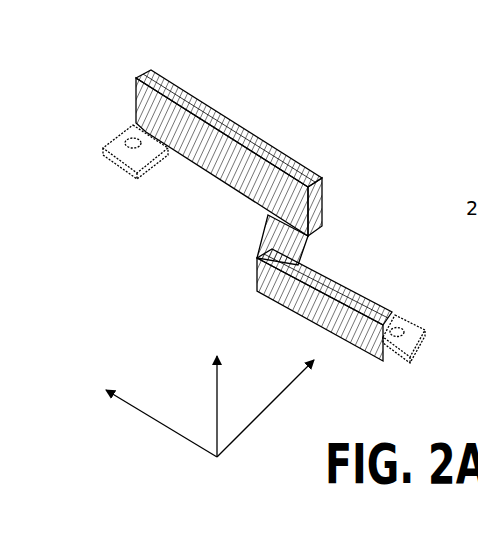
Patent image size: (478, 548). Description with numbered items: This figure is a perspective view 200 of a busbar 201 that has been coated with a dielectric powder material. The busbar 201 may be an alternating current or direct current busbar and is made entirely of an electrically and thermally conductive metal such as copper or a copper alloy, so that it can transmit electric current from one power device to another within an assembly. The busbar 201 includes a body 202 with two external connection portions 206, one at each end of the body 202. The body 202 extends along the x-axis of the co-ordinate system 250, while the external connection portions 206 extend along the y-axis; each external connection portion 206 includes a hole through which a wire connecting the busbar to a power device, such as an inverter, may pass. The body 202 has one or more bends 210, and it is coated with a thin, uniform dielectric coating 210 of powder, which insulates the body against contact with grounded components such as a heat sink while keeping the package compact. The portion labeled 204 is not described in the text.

The perspective view 200 is at (274, 238).
The busbar 201 is at (268, 177).
The body 202 is at (204, 221).
The second arm segment 204 is at (293, 300).
The external connection portion 206 is at (137, 172).
The bend 210 is at (300, 238).
The co-ordinate system 250 is at (200, 450).